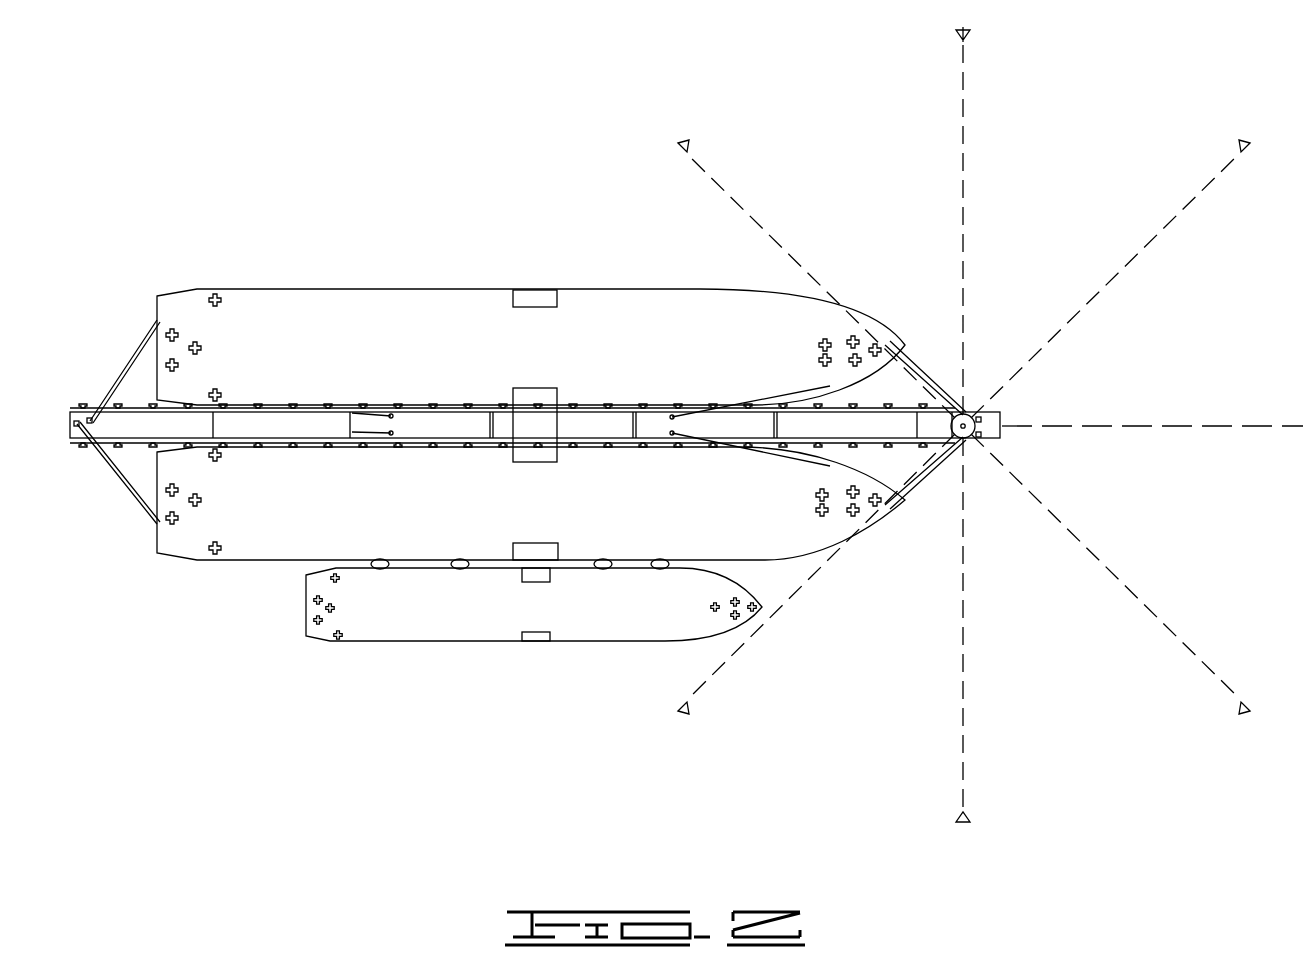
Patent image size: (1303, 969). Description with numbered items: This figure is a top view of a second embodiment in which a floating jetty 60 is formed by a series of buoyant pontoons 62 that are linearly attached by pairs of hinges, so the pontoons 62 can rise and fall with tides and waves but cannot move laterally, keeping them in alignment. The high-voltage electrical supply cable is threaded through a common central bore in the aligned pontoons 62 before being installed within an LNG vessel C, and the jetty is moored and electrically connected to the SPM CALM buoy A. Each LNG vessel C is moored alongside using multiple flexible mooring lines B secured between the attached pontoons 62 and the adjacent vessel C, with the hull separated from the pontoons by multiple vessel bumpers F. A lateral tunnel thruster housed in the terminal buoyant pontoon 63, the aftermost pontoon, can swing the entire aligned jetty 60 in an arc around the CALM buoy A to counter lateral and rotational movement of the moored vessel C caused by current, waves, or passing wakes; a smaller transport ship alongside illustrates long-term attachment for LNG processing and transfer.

The floating jetty 60 is at (872, 434).
The buoyant pontoon 62 is at (455, 425).
The terminal buoyant pontoon 63 is at (74, 411).
The SPM CALM buoy A is at (985, 425).
The flexible mooring line B is at (135, 350).
The LNG vessel C is at (531, 465).
The vessel bumper F is at (298, 408).